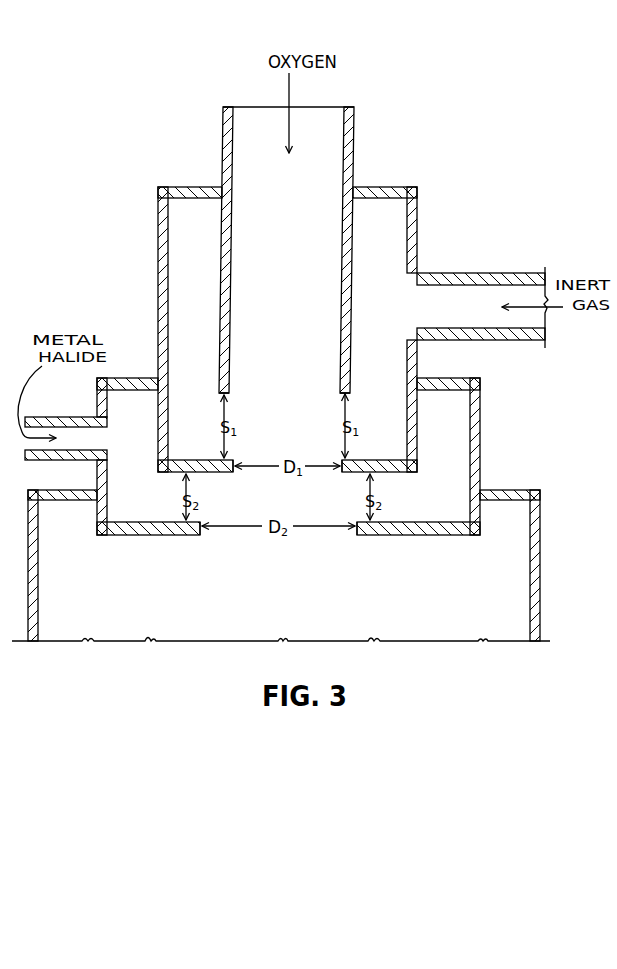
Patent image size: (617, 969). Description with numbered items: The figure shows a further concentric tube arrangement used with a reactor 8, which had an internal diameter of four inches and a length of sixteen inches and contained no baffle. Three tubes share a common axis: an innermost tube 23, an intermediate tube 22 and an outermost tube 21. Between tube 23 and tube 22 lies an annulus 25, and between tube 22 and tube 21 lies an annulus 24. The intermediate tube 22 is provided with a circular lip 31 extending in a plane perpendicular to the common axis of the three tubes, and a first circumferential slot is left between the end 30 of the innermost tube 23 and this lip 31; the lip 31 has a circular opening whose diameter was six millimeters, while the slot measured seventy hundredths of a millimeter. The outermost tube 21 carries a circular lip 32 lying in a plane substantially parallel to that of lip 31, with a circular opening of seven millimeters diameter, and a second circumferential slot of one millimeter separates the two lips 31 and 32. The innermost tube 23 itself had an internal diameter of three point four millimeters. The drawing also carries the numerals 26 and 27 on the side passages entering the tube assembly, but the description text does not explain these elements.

The reactor 8 is at (295, 611).
The outermost concentric tube 21 is at (480, 433).
The intermediate concentric tube 22 is at (417, 236).
The innermost concentric tube 23 is at (354, 143).
The annulus 24 is at (143, 420).
The annulus 25 is at (206, 239).
The inert gas inlet tube 26 is at (478, 274).
The metal halide inlet tube 27 is at (46, 401).
The end of tube 23 30 is at (229, 393).
The circular lip 31 is at (237, 468).
The circular lip 32 is at (200, 536).